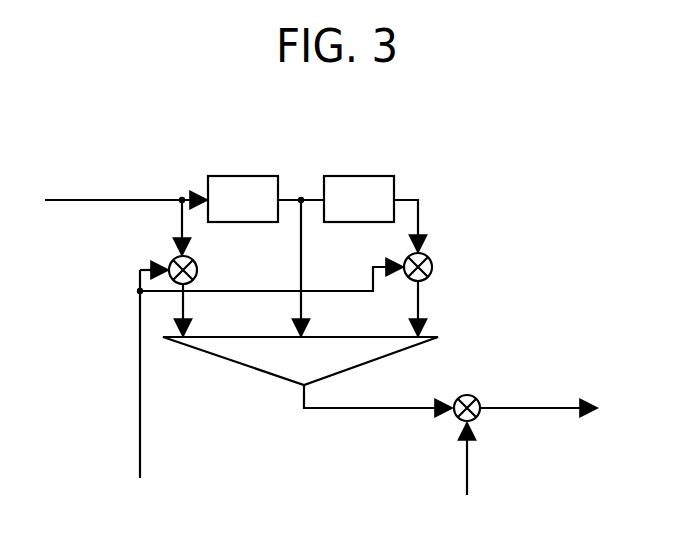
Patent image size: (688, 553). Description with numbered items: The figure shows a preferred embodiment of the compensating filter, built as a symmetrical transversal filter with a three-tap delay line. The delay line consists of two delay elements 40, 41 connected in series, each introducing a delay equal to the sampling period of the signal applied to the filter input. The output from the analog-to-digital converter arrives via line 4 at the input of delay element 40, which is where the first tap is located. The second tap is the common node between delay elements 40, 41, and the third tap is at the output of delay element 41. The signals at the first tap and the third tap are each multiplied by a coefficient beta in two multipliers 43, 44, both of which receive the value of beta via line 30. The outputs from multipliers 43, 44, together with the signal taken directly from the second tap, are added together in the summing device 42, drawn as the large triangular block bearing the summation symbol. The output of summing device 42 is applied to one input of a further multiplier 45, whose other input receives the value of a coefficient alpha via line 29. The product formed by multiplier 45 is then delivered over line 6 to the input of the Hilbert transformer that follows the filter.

The line 4 is at (90, 199).
The delay element 40 is at (233, 176).
The delay element 41 is at (358, 176).
The multiplier 43 is at (198, 268).
The multiplier 44 is at (432, 257).
The line 30 is at (140, 420).
The summing device 42 is at (247, 368).
The multiplier 45 is at (475, 396).
The line 29 is at (467, 478).
The line 6 is at (540, 410).